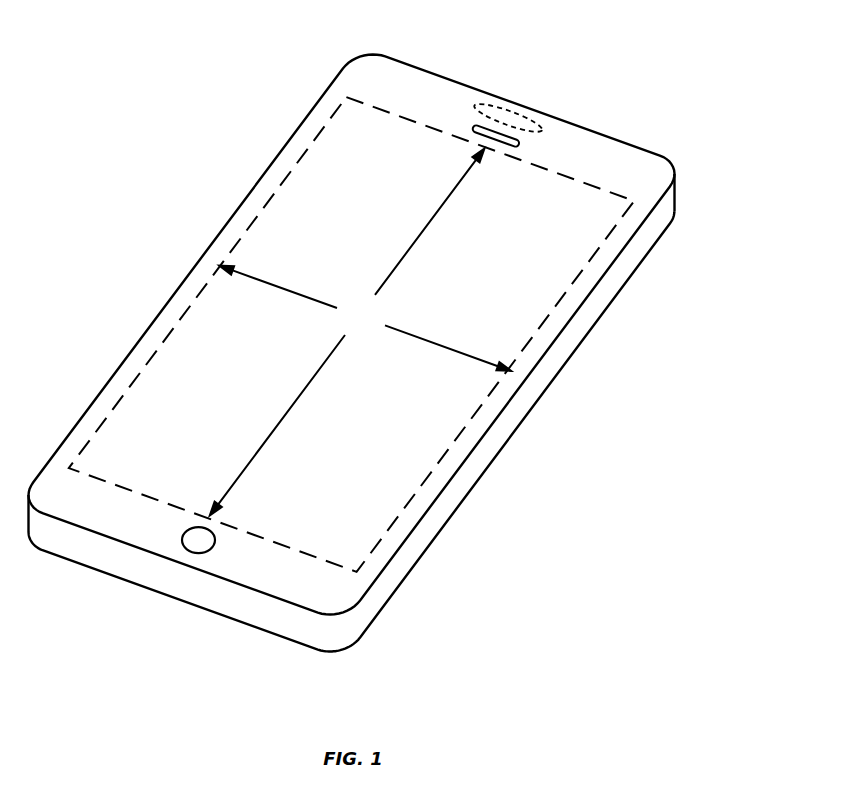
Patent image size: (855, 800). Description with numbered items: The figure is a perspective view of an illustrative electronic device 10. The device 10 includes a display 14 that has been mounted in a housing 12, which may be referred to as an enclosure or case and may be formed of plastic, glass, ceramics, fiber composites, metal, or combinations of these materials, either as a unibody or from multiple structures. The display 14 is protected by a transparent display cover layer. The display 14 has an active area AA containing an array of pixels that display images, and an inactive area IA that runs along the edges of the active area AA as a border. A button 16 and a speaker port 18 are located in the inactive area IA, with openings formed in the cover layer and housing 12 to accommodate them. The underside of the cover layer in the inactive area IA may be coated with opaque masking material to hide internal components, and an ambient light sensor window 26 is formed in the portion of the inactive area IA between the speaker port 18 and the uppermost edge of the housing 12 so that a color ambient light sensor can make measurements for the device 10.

The electronic device 10 is at (393, 330).
The housing 12 is at (585, 337).
The display 14 is at (208, 312).
The button 16 is at (200, 555).
The speaker port 18 is at (503, 148).
The ambient light sensor window 26 is at (517, 118).
The active area AA is at (360, 332).
The inactive area IA is at (400, 87).